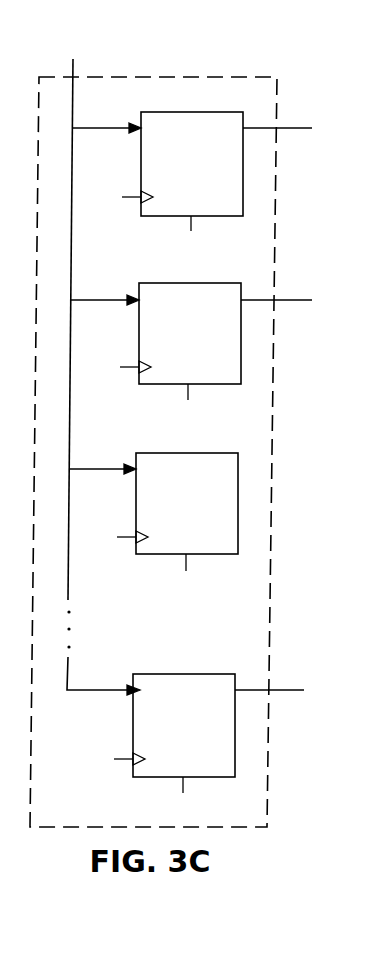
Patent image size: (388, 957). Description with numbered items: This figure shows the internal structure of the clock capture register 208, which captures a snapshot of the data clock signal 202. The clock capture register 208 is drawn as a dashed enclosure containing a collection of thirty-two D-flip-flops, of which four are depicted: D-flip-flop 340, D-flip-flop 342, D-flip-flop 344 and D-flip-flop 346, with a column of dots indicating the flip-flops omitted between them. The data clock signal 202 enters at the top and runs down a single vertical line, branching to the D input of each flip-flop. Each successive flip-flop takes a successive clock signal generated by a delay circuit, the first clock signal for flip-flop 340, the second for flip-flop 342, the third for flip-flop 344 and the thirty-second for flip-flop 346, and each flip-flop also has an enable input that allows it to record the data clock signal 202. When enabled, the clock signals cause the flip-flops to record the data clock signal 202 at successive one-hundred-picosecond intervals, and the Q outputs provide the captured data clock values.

The data clock signal 202 is at (84, 349).
The clock capture register 208 is at (270, 710).
The D-flip-flop 340 is at (229, 185).
The D-flip-flop 342 is at (228, 355).
The D-flip-flop 344 is at (158, 526).
The D-flip-flop 346 is at (221, 747).